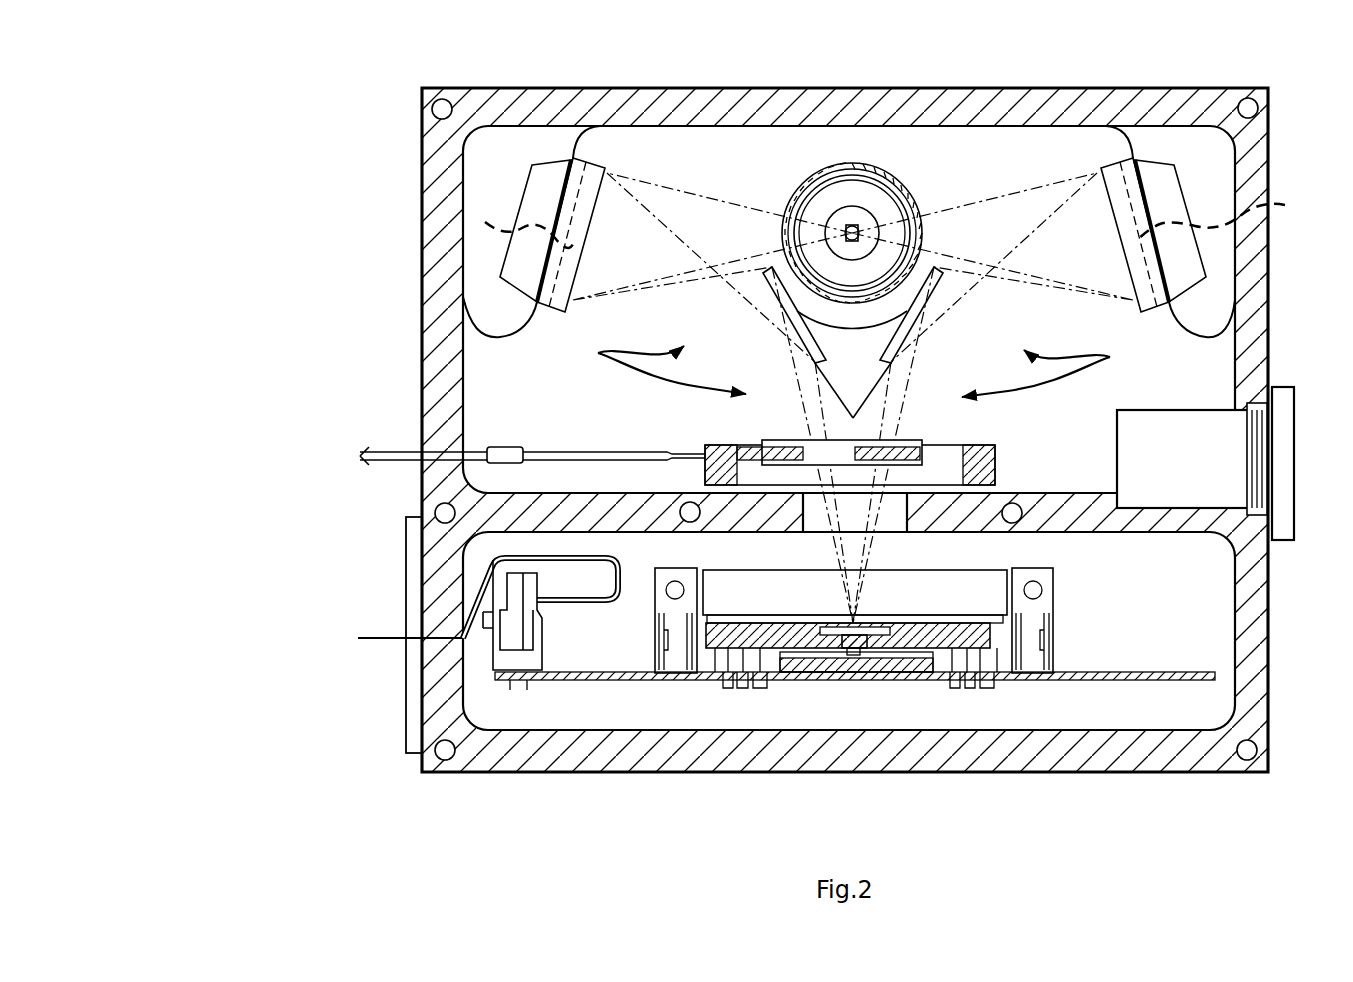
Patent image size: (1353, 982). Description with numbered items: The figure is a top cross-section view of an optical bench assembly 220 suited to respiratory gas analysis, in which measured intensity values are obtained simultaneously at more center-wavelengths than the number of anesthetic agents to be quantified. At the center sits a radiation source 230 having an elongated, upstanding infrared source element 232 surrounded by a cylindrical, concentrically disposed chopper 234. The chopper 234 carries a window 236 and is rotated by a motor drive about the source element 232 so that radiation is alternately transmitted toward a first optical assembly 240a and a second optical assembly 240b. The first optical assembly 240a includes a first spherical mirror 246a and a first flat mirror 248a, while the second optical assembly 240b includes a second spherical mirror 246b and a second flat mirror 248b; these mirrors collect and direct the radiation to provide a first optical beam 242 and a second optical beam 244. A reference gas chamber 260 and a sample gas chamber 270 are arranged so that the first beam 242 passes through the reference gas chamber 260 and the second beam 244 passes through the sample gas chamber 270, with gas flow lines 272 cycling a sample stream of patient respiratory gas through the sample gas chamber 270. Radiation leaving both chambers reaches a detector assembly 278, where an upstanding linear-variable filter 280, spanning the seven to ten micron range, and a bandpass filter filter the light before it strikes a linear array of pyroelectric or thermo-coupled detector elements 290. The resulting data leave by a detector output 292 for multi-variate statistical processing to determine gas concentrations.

The optical bench assembly 220 is at (372, 156).
The radiation source 230 is at (885, 185).
The infrared source element 232 is at (852, 240).
The chopper 234 is at (920, 198).
The window 236 is at (810, 185).
The first optical assembly 240a is at (1098, 236).
The second optical assembly 240b is at (604, 241).
The first optical beam 242 is at (1055, 370).
The second optical beam 244 is at (651, 366).
The first spherical mirror 246a is at (1221, 235).
The second spherical mirror 246b is at (537, 235).
The first flat mirror 248a is at (917, 320).
The second flat mirror 248b is at (752, 313).
The reference gas chamber 260 is at (850, 445).
The sample gas chamber 270 is at (820, 452).
The gas flow lines 272 is at (548, 458).
The detector assembly 278 is at (1062, 628).
The linear-variable filter 280 is at (855, 694).
The detector elements 290 is at (858, 652).
The detector output 292 is at (385, 638).